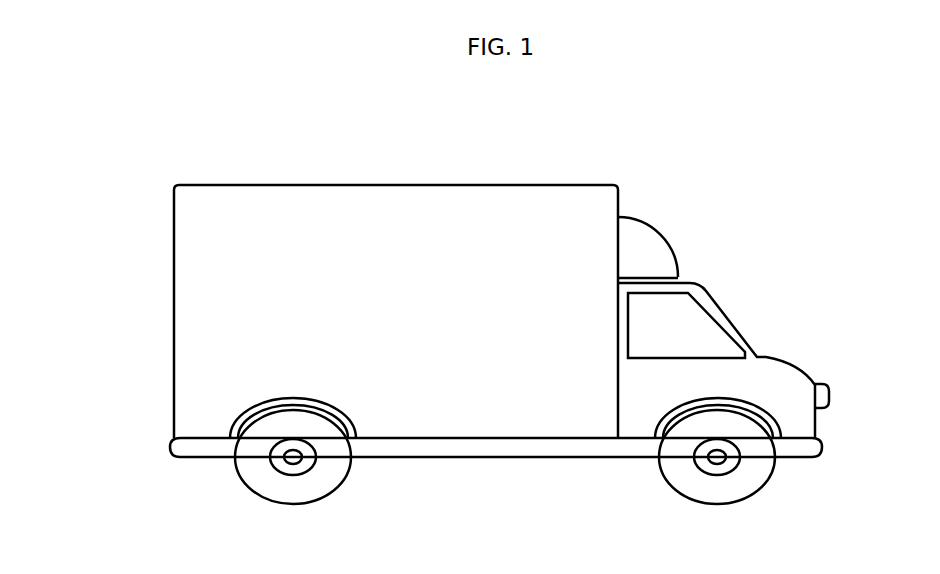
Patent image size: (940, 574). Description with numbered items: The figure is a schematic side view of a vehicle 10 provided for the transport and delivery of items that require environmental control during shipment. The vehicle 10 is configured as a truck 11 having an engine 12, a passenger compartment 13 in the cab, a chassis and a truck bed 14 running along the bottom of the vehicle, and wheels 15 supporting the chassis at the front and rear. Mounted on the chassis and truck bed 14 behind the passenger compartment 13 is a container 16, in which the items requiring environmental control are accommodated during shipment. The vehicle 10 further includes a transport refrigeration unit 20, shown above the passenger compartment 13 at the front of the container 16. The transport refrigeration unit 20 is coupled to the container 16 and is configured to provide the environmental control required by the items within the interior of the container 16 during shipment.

The vehicle 10 is at (480, 336).
The truck 11 is at (824, 395).
The engine 12 is at (772, 392).
The passenger compartment 13 is at (693, 348).
The chassis and truck bed 14 is at (187, 445).
The wheels 15 is at (255, 452).
The container 16 is at (396, 311).
The transport refrigeration unit 20 is at (668, 230).